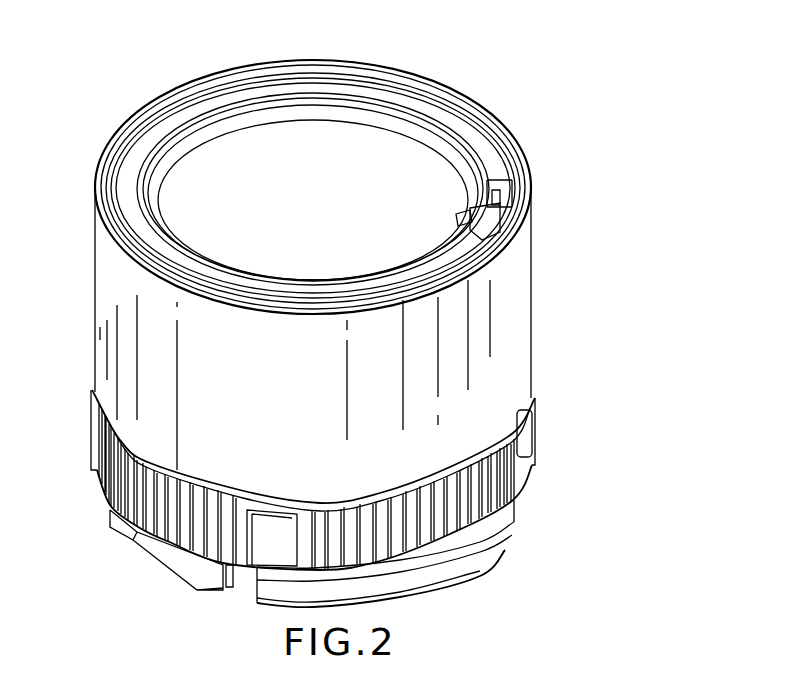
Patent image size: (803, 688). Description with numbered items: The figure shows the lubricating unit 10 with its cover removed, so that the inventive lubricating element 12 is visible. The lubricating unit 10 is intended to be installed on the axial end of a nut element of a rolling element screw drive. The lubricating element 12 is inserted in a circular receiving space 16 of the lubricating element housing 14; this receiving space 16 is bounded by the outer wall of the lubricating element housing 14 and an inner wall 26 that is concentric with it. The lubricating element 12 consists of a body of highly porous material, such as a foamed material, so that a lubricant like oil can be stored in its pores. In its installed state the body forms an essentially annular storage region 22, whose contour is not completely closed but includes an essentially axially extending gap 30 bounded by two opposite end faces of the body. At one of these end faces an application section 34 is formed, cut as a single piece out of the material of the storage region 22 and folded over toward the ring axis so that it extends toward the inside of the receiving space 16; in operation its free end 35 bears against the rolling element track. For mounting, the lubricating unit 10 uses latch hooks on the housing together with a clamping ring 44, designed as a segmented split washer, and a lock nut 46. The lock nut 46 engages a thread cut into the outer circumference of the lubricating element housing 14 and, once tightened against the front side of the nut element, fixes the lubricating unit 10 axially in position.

The lubricating unit 10 is at (622, 88).
The lubricating element 12 is at (448, 119).
The lubricating element housing 14 is at (510, 375).
The receiving space 16 is at (115, 185).
The storage region 22 is at (487, 152).
The inner wall 26 is at (148, 218).
The gap 30 is at (510, 187).
The application section 34 is at (487, 240).
The free end 35 is at (455, 222).
The clamping ring 44 is at (487, 540).
The lock nut 46 is at (520, 483).